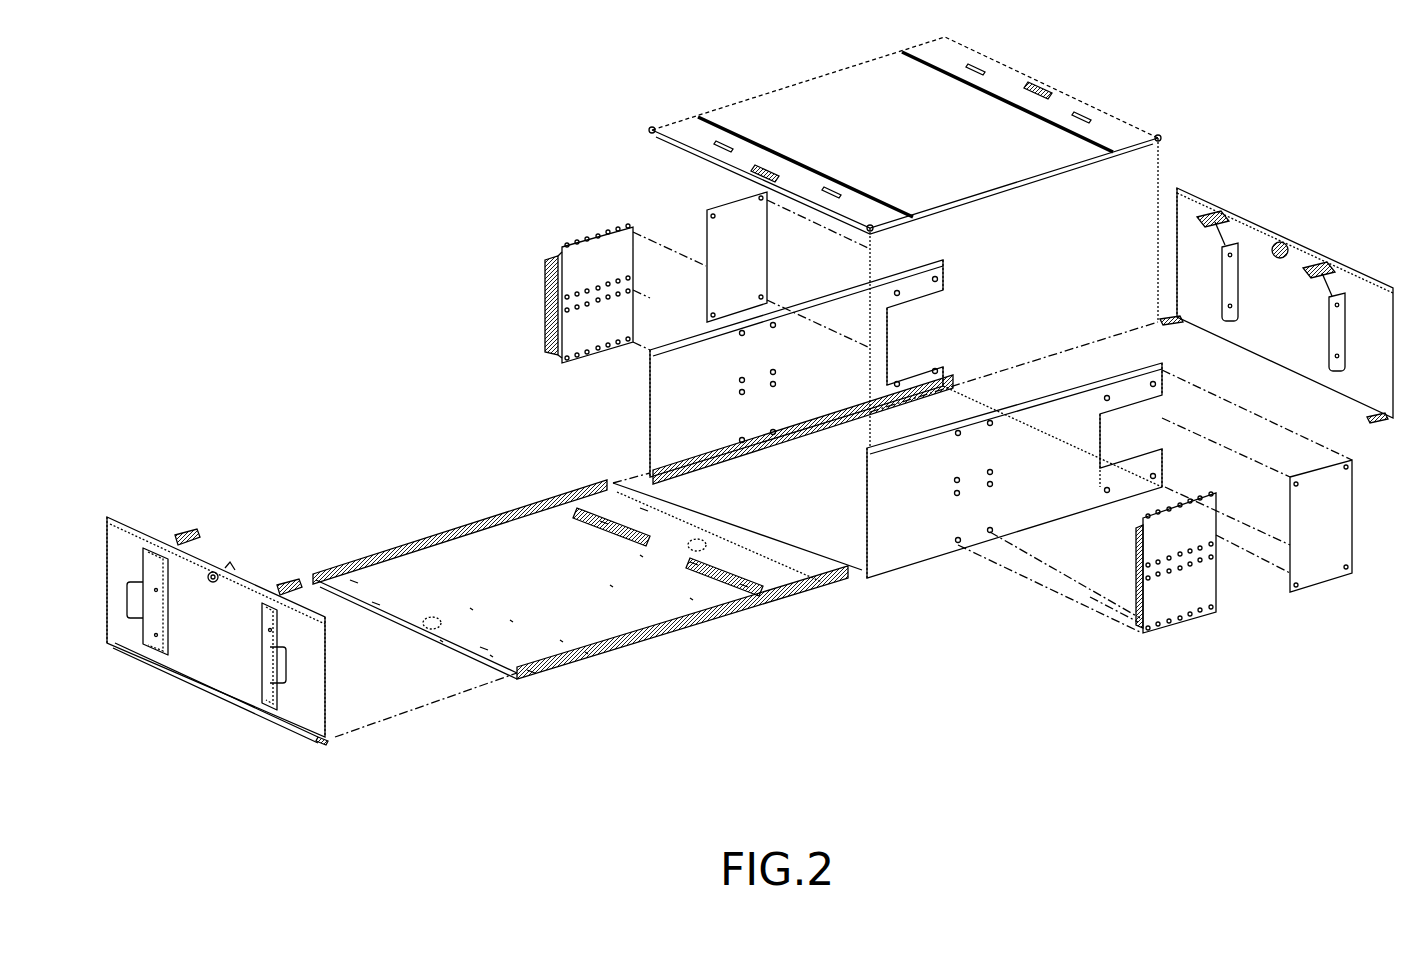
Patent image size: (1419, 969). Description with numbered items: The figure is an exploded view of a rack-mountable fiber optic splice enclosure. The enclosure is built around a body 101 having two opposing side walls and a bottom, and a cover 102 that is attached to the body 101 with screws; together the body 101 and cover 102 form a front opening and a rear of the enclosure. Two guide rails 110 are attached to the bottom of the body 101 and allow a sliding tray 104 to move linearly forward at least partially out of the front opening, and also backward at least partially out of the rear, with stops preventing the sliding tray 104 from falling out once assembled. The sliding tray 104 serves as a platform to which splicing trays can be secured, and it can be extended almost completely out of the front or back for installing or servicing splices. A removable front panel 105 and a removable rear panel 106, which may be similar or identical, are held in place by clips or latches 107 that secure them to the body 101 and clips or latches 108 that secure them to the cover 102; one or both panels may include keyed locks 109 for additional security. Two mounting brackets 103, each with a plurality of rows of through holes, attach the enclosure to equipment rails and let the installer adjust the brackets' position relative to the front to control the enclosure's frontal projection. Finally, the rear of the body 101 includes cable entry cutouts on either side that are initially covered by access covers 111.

The body 101 is at (902, 542).
The cover 102 is at (783, 105).
The mounting brackets 103 is at (560, 232).
The sliding tray 104 is at (520, 545).
The front panel 105 is at (133, 527).
The rear panel 106 is at (1237, 215).
The clips or latches 107 is at (335, 739).
The clips or latches 108 is at (193, 535).
The keyed locks 109 is at (213, 583).
The guide rails 110 is at (655, 478).
The access covers 111 is at (703, 232).